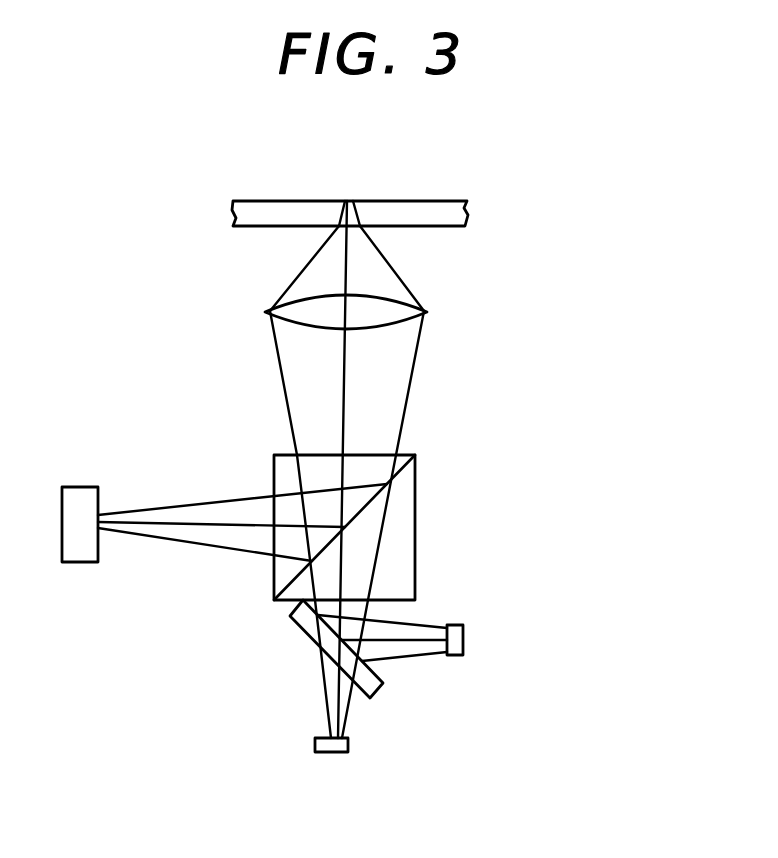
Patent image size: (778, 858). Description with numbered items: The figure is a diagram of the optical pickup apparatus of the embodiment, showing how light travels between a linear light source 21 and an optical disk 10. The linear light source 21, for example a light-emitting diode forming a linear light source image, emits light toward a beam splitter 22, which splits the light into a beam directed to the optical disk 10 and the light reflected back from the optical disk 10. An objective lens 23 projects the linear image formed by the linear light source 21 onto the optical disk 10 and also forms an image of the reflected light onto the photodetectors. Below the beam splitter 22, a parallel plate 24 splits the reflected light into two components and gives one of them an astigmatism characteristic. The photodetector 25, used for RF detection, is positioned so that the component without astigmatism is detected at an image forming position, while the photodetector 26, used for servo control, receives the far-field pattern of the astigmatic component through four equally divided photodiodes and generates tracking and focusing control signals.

The optical disk 10 is at (417, 202).
The linear light source 21 is at (82, 563).
The beam splitter 22 is at (415, 482).
The objective lens 23 is at (427, 311).
The parallel plate 24 is at (383, 688).
The photodetector for RF detection 25 is at (457, 623).
The photodetector for servo control 26 is at (322, 753).